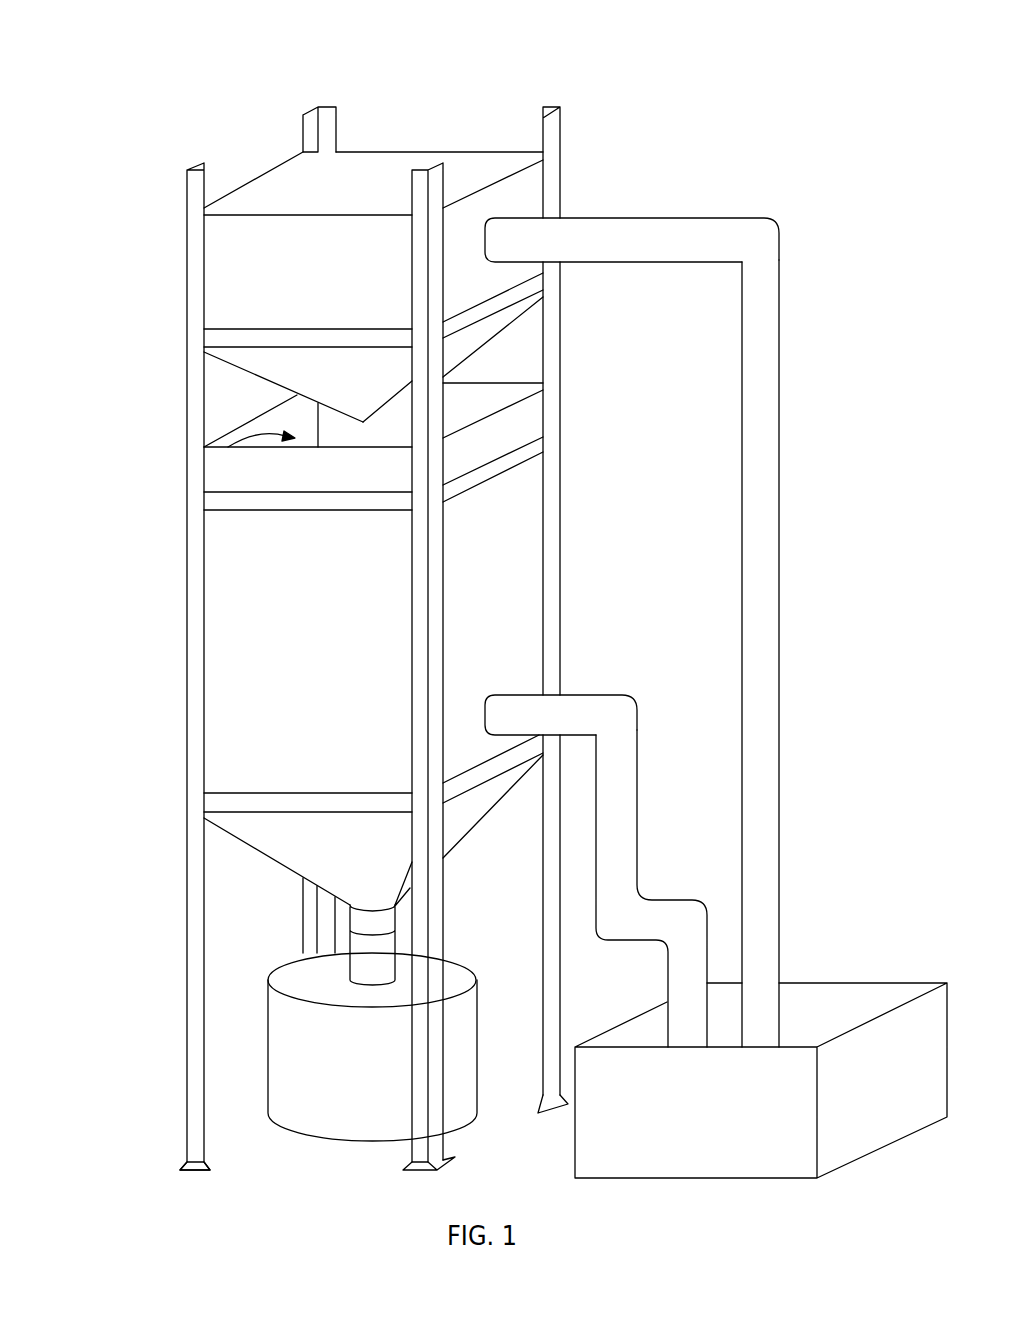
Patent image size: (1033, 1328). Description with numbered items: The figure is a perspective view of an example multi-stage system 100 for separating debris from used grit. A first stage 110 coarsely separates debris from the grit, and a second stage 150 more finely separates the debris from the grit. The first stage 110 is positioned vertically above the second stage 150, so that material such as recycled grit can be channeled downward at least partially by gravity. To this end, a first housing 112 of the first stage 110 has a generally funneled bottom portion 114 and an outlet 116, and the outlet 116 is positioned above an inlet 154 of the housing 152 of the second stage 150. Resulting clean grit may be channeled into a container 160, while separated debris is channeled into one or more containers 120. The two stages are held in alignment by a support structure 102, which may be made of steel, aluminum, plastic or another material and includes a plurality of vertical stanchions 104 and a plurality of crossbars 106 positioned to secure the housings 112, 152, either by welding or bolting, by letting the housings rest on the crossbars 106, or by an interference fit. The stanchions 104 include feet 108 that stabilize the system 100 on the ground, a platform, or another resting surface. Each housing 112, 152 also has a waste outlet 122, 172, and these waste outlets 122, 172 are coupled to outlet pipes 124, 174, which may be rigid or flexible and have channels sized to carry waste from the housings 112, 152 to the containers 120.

The multi-stage system 100 is at (173, 56).
The support structure 102 is at (190, 800).
The vertical stanchions 104 is at (304, 128).
The crossbars 106 is at (548, 447).
The feet 108 is at (185, 1169).
The first stage 110 is at (112, 289).
The first housing 112 is at (325, 287).
The funneled bottom portion 114 is at (245, 356).
The outlet 116 is at (363, 423).
The containers 120 is at (712, 1124).
The waste outlet 122 is at (484, 236).
The outlet pipe 124 is at (769, 357).
The second stage 150 is at (112, 664).
The housing 152 is at (325, 664).
The inlet 154 is at (204, 447).
The container 160 is at (389, 1074).
The waste outlet 172 is at (487, 712).
The outlet pipe 174 is at (639, 744).